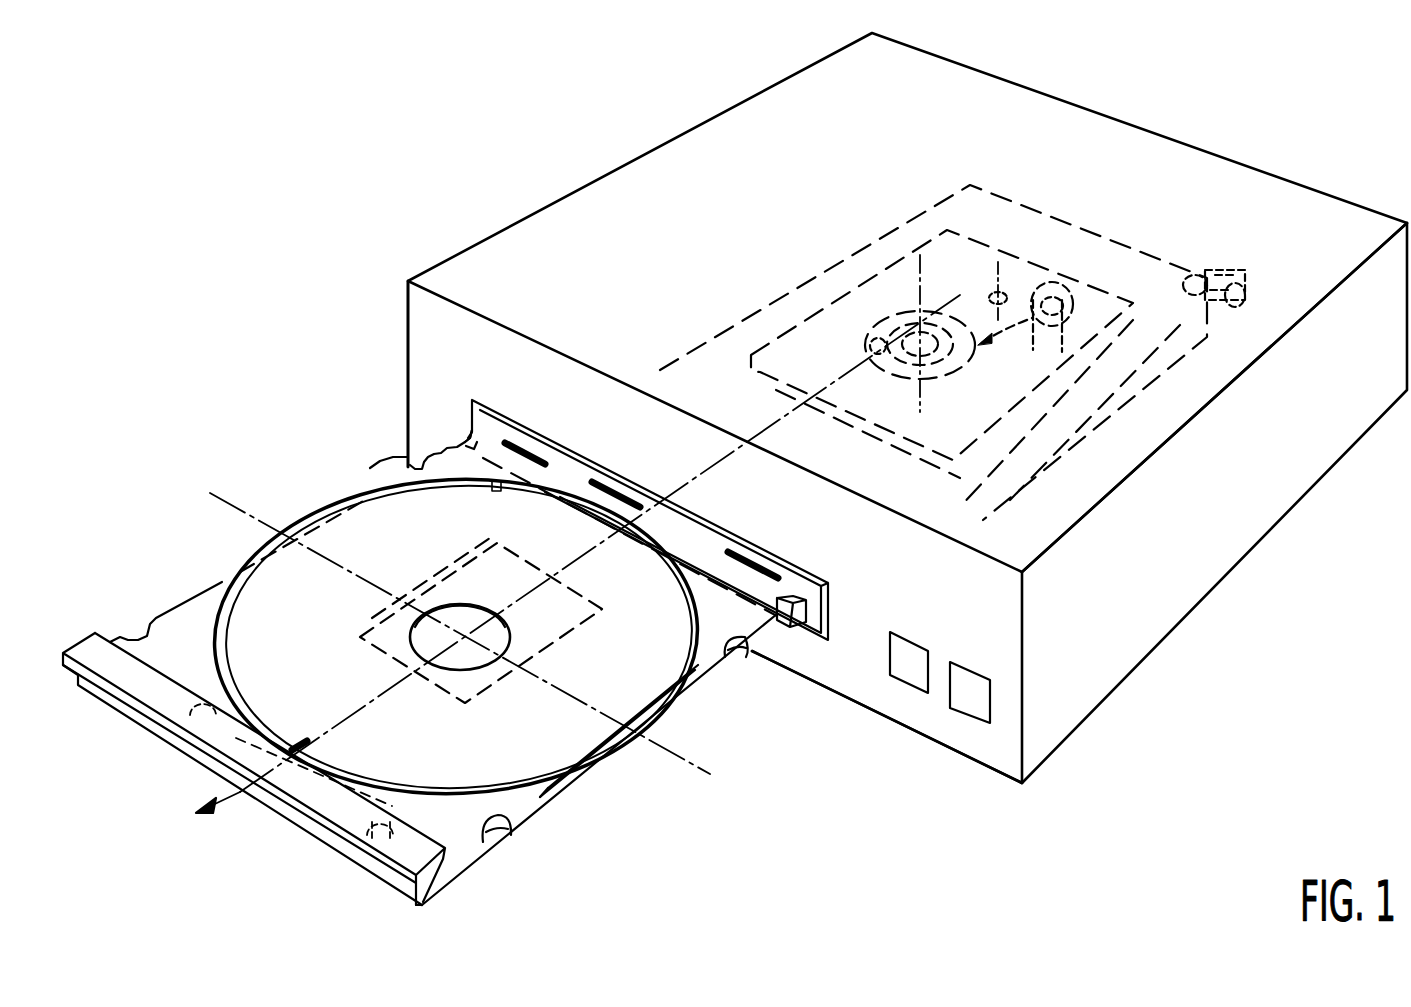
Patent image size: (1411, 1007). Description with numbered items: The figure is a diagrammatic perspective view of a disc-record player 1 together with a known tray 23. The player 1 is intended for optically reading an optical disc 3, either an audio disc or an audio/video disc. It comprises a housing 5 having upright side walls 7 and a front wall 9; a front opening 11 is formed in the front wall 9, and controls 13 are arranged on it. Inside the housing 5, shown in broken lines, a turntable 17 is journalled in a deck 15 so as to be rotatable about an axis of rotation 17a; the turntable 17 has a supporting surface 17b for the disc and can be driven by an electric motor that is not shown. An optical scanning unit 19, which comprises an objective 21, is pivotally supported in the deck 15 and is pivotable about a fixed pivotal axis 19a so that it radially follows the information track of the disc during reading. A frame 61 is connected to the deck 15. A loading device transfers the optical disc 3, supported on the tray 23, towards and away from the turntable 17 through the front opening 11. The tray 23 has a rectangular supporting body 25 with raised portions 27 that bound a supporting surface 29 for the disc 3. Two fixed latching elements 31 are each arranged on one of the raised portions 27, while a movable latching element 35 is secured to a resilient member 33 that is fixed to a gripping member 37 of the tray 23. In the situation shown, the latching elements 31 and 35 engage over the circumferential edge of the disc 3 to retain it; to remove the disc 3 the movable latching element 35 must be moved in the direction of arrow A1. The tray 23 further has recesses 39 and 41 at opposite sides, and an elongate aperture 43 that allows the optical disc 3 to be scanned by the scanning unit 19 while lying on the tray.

The disc-record player 1 is at (366, 410).
The optical disc 3 is at (598, 756).
The housing 5 is at (1096, 712).
The upright side walls 7 is at (406, 335).
The front wall 9 is at (891, 716).
The front opening 11 is at (493, 422).
The controls 13 is at (962, 680).
The deck 15 is at (778, 384).
The turntable 17 is at (934, 380).
The axis of rotation 17a is at (923, 268).
The supporting surface 17b is at (868, 347).
The optical scanning unit 19 is at (1060, 285).
The pivotal axis 19a is at (1028, 255).
The objective 21 is at (1067, 312).
The tray 23 is at (586, 797).
The rectangular supporting body 25 is at (184, 597).
The raised portions 27 is at (407, 456).
The supporting surface 29 is at (666, 722).
The fixed latching elements 31 is at (493, 503).
The resilient member 33 is at (352, 852).
The movable latching element 35 is at (300, 742).
The gripping member 37 is at (165, 705).
The recess 39 is at (375, 468).
The recess 41 is at (466, 441).
The elongate aperture 43 is at (452, 590).
The frame 61 is at (1022, 478).
The arrow A1 is at (228, 795).